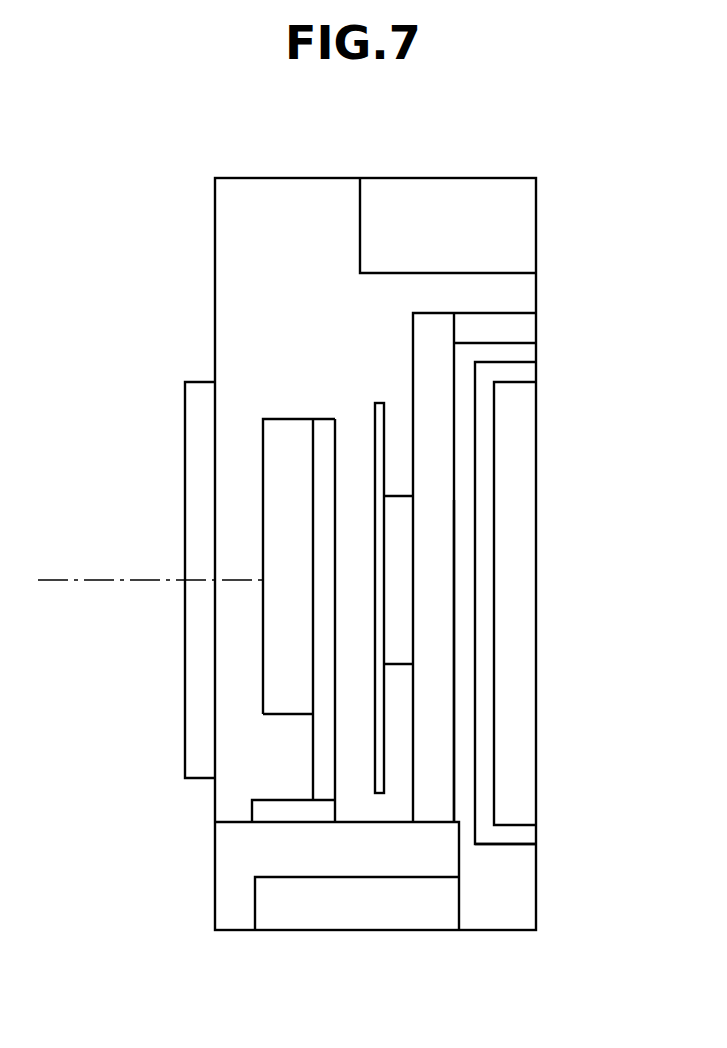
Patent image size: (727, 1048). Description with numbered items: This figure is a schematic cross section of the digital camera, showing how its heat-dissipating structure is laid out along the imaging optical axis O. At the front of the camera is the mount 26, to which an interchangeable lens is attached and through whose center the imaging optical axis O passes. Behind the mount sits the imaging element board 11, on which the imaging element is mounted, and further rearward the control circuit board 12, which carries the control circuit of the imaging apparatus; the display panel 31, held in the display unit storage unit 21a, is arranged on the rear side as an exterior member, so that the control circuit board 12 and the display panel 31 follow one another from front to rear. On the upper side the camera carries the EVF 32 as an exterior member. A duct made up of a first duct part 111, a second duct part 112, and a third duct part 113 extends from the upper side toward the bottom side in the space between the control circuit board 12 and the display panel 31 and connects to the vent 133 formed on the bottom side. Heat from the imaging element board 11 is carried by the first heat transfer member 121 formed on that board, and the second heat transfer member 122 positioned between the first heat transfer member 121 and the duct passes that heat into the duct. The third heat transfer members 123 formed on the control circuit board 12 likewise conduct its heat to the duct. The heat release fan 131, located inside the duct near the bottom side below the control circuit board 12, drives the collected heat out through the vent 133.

The imaging optical axis O is at (72, 578).
The imaging element board 11 is at (290, 419).
The control circuit board 12 is at (384, 470).
The mount 26 is at (202, 380).
The display panel 31 is at (518, 402).
The EVF 32 is at (500, 217).
The first duct part 111 is at (517, 322).
The second duct part 112 is at (433, 775).
The third duct part 113 is at (327, 853).
The first heat transfer member 121 is at (323, 743).
The second heat transfer member 122 is at (252, 810).
The third heat transfer members 123 is at (398, 597).
The heat release fan 131 is at (405, 903).
The vent 133 is at (537, 333).
The display unit storage unit 21a is at (523, 835).